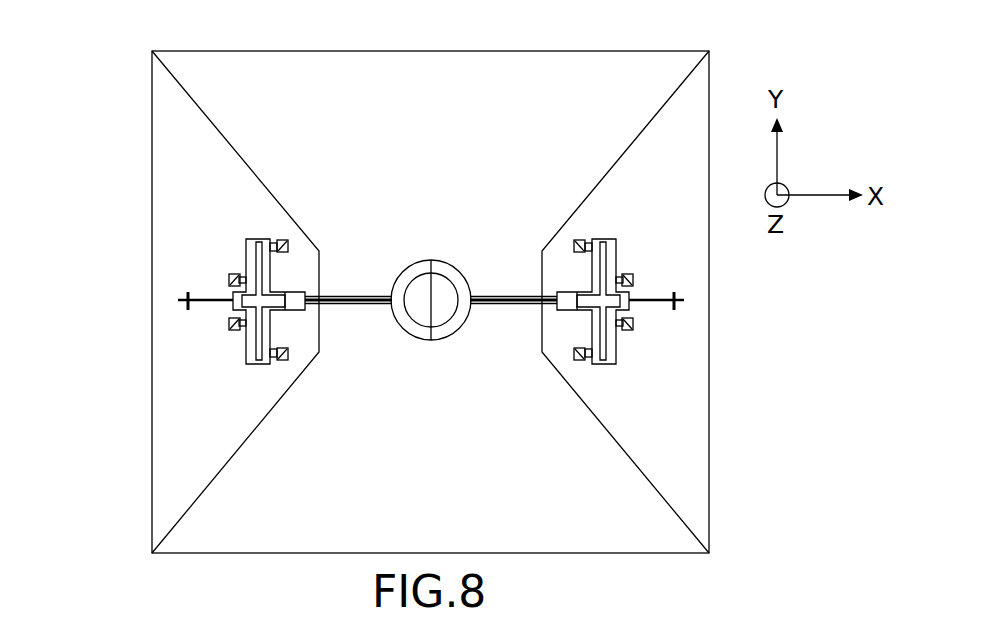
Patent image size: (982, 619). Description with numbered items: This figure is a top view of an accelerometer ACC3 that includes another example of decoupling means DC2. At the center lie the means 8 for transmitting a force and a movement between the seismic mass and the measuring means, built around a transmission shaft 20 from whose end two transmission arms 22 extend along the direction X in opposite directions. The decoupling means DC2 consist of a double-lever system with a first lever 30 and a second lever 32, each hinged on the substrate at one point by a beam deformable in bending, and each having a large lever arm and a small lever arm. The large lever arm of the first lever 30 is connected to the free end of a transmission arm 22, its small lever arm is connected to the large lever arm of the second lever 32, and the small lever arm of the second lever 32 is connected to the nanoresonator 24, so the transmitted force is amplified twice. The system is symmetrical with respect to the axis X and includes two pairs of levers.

The accelerometer ACC3 is at (742, 72).
The means for transmitting a force and a movement 8 is at (460, 262).
The transmission shaft 20 is at (411, 320).
The transmission arm 22 is at (360, 302).
The nanoresonator 24 is at (210, 302).
The first lever 30 is at (268, 330).
The second lever 32 is at (250, 352).
The decoupling means DC2 is at (232, 345).